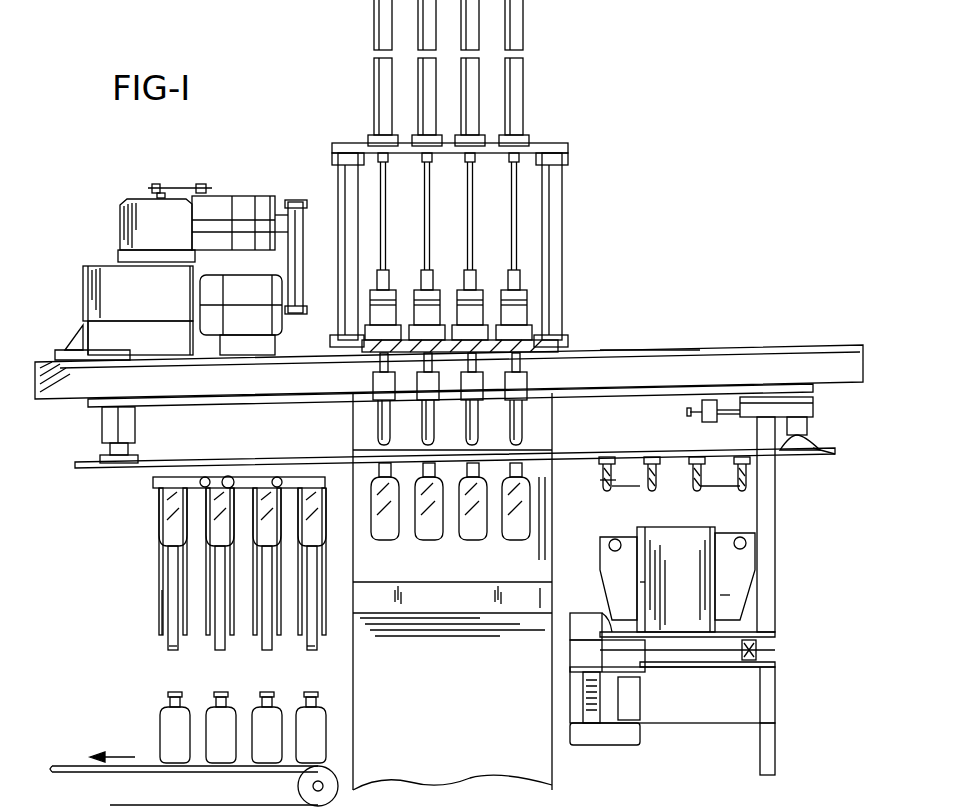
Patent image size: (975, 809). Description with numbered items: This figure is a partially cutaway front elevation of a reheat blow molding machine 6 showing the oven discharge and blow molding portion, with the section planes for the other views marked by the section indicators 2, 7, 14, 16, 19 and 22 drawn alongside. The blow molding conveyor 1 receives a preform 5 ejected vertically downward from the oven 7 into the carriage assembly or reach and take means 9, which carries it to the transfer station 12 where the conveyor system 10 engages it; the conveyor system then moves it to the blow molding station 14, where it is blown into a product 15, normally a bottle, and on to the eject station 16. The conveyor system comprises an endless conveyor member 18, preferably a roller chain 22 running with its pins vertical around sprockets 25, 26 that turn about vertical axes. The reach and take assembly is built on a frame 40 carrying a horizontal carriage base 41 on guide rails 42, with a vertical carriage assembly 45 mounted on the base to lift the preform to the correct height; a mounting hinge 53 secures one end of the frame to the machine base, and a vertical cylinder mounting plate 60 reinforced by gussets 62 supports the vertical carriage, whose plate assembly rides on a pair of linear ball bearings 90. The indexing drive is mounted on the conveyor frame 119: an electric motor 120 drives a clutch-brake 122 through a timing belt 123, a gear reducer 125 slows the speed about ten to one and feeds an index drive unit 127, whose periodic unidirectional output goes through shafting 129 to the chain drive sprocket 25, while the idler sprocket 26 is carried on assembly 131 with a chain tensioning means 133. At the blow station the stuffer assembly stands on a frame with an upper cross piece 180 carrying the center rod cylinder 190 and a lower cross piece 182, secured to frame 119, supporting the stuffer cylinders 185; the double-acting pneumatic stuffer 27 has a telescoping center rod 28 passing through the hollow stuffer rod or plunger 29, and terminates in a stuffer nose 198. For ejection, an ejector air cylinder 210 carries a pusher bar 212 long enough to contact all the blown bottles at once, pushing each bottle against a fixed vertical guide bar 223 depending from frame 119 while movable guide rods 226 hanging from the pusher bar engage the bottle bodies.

The blow molding conveyor 1 is at (632, 322).
The section line 2 is at (795, 355).
The preform 5 is at (652, 486).
The blow molding machine 6 is at (572, 190).
The oven 7 is at (678, 403).
The carriage assembly (reach and take) means 9 is at (750, 598).
The conveyor system 10 is at (98, 482).
The transfer station 12 is at (652, 448).
The blow molding station 14 is at (600, 530).
The product (bottle) 15 is at (398, 540).
The eject station 16 is at (492, 93).
The endless conveyor member 18 is at (612, 448).
The section line 19 is at (172, 445).
The roller chain 22 is at (64, 455).
The chain drive sprocket 25 is at (140, 460).
The idler sprocket 26 is at (822, 448).
The stuffer (stuffer cylinder assembly) 27 is at (372, 275).
The center rod 28 is at (466, 200).
The stuffer rod (hollow double ended plunger) 29 is at (380, 360).
The frame 40 is at (748, 720).
The horizontal carriage base 41 is at (768, 632).
The guide rails 42 is at (762, 652).
The vertical carriage assembly 45 is at (725, 592).
The mounting hinge 53 is at (640, 712).
The vertical cylinder mounting plate 60 is at (660, 527).
The gussets 62 is at (712, 580).
The linear ball bearings 90 is at (735, 548).
The frame 119 is at (38, 360).
The electric motor 120 is at (241, 315).
The clutch-brake 122 is at (246, 196).
The timing belt 123 is at (302, 202).
The gear reducer 125 is at (146, 210).
The index drive unit 127 is at (92, 268).
The shafting 129 is at (112, 400).
The idler sprocket assembly 131 is at (812, 425).
The chain tensioning means 133 is at (716, 424).
The upper cross piece 180 is at (345, 143).
The lower cross piece 182 is at (562, 340).
The stuffer cylinders 185 is at (505, 300).
The center rod cylinder 190 is at (416, 32).
The stuffer nose 198 is at (375, 418).
The ejector air cylinder 210 is at (228, 476).
The pusher bar 212 is at (185, 478).
The fixed vertical guide bar 223 is at (168, 643).
The movable guide rods 226 is at (165, 608).